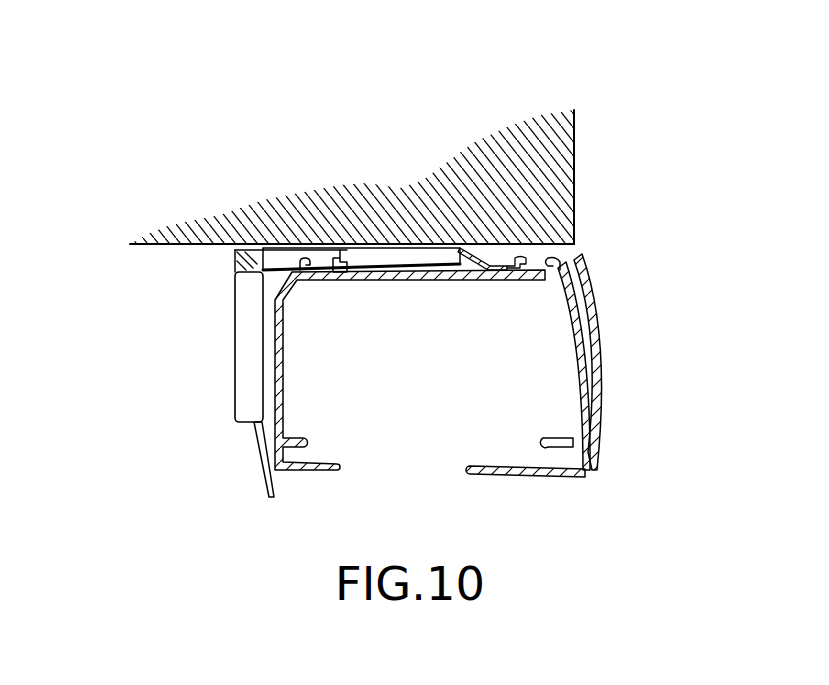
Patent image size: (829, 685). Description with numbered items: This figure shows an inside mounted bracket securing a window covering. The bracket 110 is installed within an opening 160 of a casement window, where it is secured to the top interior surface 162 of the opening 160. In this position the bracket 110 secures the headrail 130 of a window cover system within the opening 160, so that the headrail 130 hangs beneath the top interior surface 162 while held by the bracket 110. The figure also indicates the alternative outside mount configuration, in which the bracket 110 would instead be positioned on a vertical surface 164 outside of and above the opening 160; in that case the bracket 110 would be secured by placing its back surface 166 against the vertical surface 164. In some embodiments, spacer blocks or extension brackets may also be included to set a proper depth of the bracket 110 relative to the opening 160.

The bracket 110 is at (245, 382).
The headrail 130 is at (580, 337).
The opening 160 is at (152, 282).
The top interior surface 162 is at (548, 243).
The vertical surface 164 is at (573, 143).
The back surface 166 is at (243, 332).